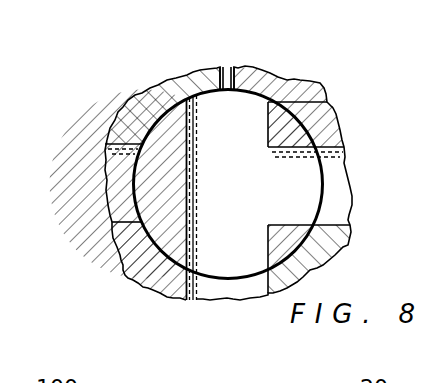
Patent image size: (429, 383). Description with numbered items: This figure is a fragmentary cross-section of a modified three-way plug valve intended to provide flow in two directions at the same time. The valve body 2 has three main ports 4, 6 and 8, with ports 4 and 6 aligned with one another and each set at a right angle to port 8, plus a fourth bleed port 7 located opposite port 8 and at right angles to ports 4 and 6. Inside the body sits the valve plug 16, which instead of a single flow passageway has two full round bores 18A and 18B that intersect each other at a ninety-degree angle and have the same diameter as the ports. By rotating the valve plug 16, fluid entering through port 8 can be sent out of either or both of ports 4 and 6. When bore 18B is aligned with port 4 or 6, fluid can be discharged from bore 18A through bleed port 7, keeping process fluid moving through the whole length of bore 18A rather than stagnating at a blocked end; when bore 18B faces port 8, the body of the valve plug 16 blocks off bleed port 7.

The valve body 2 is at (140, 110).
The port 4 is at (108, 150).
The port 6 is at (340, 226).
The bleed port 7 is at (230, 80).
The port 8 is at (190, 286).
The valve plug 16 is at (133, 182).
The bore 18A is at (189, 122).
The bore 18B is at (303, 146).